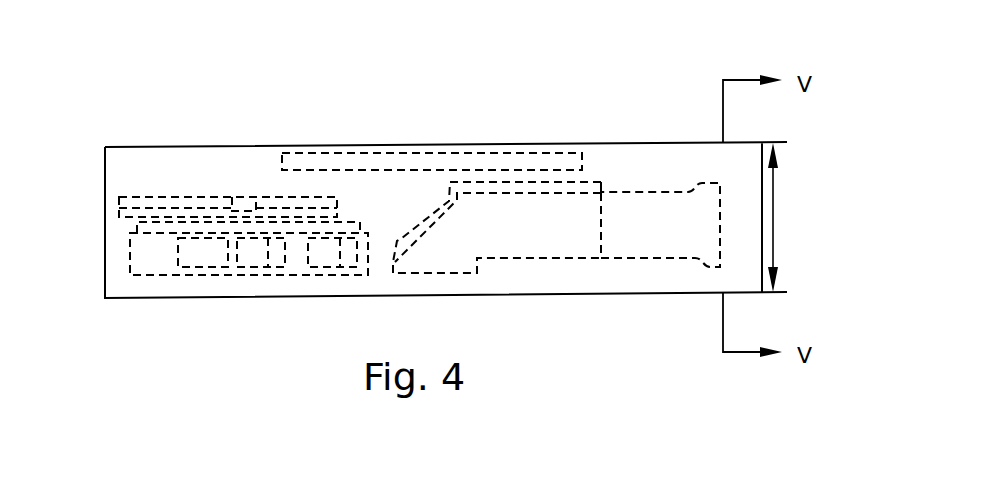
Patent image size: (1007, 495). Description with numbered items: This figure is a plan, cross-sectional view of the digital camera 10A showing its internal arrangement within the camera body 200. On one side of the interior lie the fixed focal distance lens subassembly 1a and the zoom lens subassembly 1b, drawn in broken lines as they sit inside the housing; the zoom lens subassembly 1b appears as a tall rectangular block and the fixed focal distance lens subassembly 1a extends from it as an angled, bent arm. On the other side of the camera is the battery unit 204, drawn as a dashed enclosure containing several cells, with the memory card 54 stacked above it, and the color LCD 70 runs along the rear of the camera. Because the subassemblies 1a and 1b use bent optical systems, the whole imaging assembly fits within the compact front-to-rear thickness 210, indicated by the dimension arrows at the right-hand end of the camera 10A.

The digital camera 10A is at (620, 63).
The housing 200 is at (202, 146).
The compact thickness 210 is at (772, 217).
The color LCD 70 is at (362, 158).
The memory card 54 is at (147, 207).
The battery unit 204 is at (157, 263).
The fixed focal distance lens subassembly 1a is at (601, 181).
The zoom lens subassembly 1b is at (683, 240).